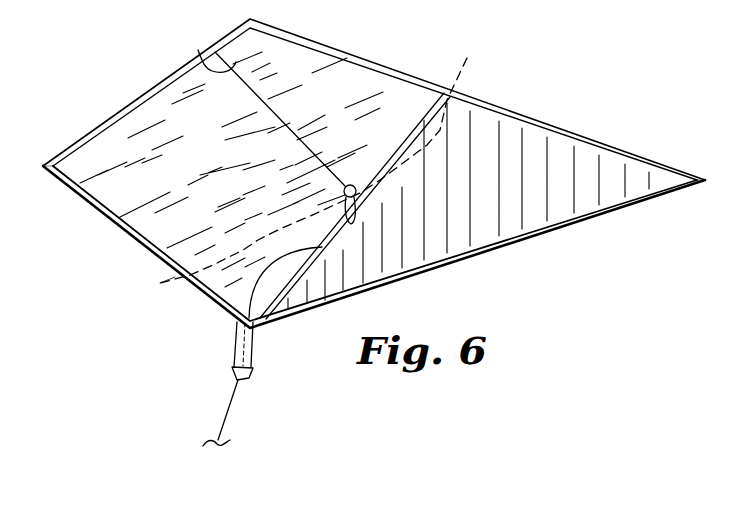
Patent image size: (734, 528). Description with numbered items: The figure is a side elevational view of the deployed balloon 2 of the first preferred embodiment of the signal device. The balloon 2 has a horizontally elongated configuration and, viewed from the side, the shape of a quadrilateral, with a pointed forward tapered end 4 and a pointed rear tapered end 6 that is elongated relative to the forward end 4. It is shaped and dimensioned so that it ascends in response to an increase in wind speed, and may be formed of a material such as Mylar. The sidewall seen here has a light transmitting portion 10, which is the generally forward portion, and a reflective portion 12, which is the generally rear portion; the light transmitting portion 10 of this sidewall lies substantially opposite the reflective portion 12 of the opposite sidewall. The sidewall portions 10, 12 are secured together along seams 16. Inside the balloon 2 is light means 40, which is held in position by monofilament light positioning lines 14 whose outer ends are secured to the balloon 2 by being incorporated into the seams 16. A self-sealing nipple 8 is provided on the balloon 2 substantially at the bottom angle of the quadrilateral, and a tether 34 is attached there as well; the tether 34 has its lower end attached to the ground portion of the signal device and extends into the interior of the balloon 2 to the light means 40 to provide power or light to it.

The balloon 2 is at (569, 121).
The forward tapered end 4 is at (80, 197).
The rear tapered end 6 is at (620, 208).
The self-sealing nipple 8 is at (250, 372).
The light transmitting portion 10 is at (307, 73).
The reflective portion 12 is at (496, 170).
The light positioning lines 14 is at (200, 52).
The seams 16 is at (420, 116).
The tether 34 is at (228, 413).
The light means 40 is at (149, 292).